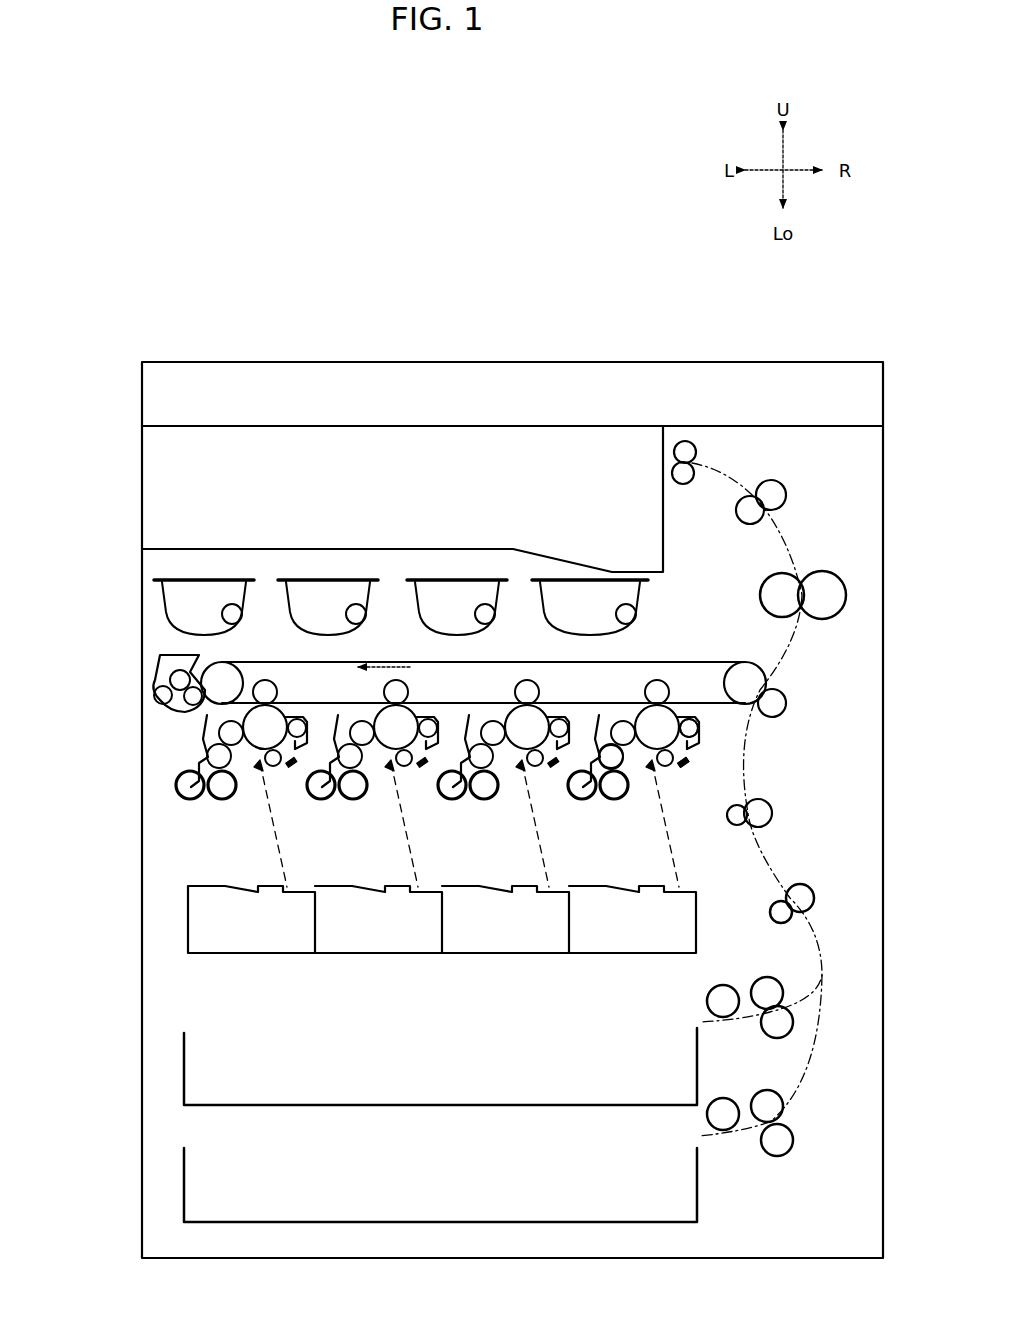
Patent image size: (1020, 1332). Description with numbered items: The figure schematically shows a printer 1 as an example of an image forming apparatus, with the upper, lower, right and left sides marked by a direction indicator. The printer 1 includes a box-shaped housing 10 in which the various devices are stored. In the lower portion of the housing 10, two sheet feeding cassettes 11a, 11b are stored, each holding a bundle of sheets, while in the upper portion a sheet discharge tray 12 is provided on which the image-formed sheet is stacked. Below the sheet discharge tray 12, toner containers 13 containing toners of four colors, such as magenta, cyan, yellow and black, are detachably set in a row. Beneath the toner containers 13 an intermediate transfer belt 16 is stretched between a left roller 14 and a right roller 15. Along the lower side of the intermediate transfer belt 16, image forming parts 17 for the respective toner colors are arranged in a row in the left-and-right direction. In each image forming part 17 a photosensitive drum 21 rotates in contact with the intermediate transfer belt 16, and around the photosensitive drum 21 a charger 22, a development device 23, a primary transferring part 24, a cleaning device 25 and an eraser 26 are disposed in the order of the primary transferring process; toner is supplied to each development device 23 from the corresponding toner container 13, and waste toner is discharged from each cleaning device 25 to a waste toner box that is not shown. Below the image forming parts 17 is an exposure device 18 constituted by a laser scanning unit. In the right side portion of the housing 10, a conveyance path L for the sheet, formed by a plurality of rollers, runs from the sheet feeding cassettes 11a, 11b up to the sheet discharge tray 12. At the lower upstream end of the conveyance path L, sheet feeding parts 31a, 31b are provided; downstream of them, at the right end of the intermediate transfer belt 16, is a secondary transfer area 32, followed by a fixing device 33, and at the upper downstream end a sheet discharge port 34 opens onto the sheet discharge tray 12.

The printer 1 is at (147, 338).
The housing 10 is at (141, 518).
The sheet feeding cassette 11a is at (183, 1065).
The sheet feeding cassette 11b is at (183, 1180).
The sheet discharge tray 12 is at (598, 556).
The toner container 13 is at (197, 578).
The left roller 14 is at (229, 672).
The right roller 15 is at (749, 670).
The intermediate transfer belt 16 is at (670, 660).
The image forming part 17 is at (243, 805).
The exposure device 18 is at (187, 918).
The photosensitive drum 21 is at (643, 718).
The charger 22 is at (667, 764).
The development device 23 is at (597, 792).
The primary transferring part 24 is at (676, 696).
The cleaning device 25 is at (700, 730).
The eraser 26 is at (690, 772).
The sheet feeding part 31a is at (800, 1011).
The sheet feeding part 31b is at (800, 1124).
The secondary transfer area 32 is at (792, 715).
The fixing device 33 is at (815, 565).
The sheet discharge port 34 is at (660, 459).
The conveyance path L is at (757, 850).